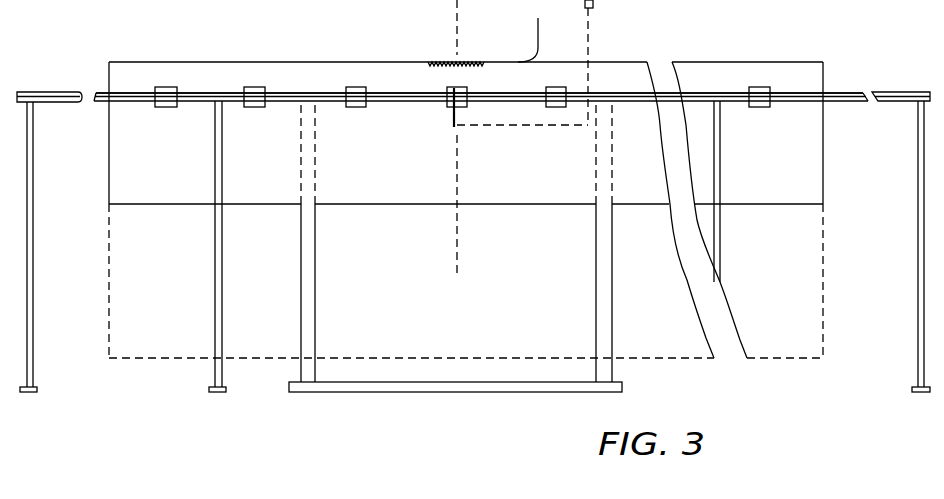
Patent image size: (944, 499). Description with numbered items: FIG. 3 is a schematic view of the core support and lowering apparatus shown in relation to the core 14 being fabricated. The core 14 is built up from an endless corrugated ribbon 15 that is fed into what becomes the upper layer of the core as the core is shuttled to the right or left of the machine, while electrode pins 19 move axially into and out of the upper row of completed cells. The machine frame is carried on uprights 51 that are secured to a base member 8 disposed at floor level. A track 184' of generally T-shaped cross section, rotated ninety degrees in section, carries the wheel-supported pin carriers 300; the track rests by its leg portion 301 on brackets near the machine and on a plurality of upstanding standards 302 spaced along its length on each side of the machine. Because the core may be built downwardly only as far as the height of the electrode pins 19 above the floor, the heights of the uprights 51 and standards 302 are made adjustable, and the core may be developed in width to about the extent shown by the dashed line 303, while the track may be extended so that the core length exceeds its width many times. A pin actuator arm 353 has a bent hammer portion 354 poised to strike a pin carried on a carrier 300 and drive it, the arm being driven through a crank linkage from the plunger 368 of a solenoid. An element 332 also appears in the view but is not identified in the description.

The base member 8 is at (448, 382).
The core 14 is at (704, 60).
The corrugated ribbon 15 is at (538, 27).
The electrode pins 19 is at (447, 61).
The uprights 51 is at (315, 327).
The track 184' is at (479, 63).
The pin carriers 300 is at (252, 86).
The leg portions 301 is at (287, 101).
The standards 302 is at (33, 250).
The dashed line 303 is at (472, 357).
The actuator 332 is at (487, 4).
The pin actuator arm 353 is at (453, 116).
The hammer portion 354 is at (462, 89).
The plunger 368 is at (593, 4).